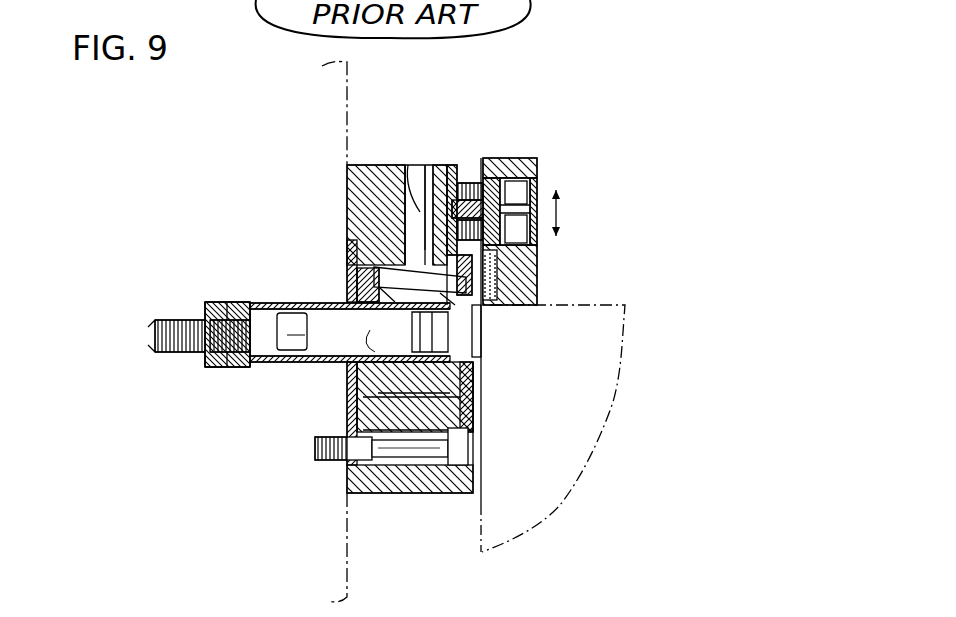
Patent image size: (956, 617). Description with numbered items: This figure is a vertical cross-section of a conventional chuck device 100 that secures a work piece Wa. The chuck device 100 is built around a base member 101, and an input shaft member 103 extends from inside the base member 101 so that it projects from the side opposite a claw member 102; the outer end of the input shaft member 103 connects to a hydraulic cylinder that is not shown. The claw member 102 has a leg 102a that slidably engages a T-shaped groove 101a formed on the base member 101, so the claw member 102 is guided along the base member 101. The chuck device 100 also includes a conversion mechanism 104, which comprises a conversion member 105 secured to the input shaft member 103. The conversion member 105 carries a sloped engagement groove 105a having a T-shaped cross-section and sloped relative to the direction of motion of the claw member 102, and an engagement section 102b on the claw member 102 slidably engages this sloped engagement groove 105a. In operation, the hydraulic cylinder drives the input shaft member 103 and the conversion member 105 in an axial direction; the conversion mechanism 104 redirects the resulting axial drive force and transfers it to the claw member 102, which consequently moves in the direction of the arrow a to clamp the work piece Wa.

The chuck device 100 is at (632, 161).
The base member 101 is at (345, 167).
The T-shaped groove 101a is at (410, 165).
The claw member 102 is at (537, 273).
The leg 102a is at (436, 200).
The engagement section 102b is at (484, 318).
The input shaft member 103 is at (275, 300).
The conversion mechanism 104 is at (390, 236).
The conversion member 105 is at (348, 272).
The sloped engagement groove 105a is at (482, 346).
The arrow a is at (560, 212).
The work piece Wa is at (622, 375).